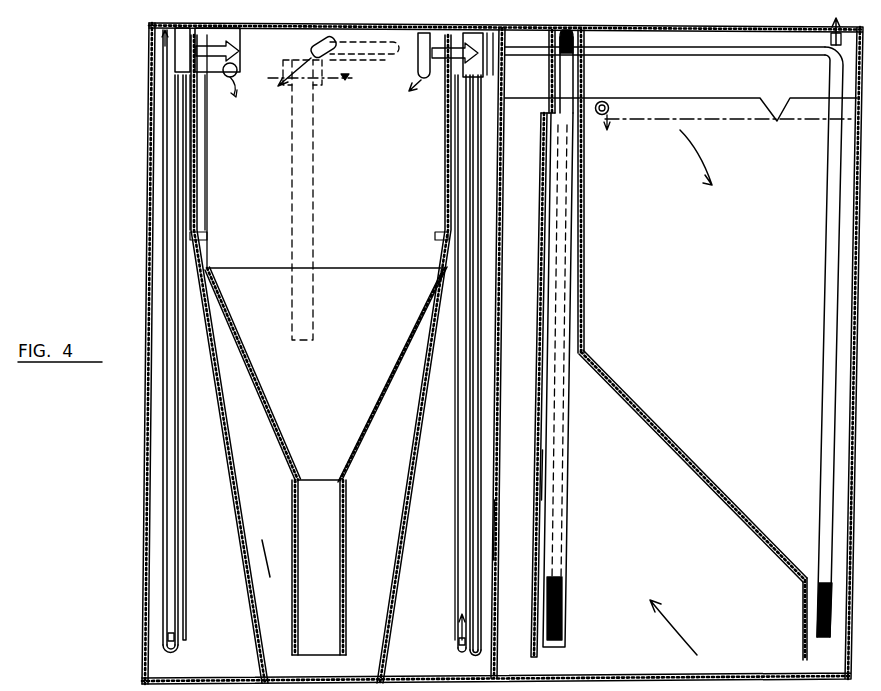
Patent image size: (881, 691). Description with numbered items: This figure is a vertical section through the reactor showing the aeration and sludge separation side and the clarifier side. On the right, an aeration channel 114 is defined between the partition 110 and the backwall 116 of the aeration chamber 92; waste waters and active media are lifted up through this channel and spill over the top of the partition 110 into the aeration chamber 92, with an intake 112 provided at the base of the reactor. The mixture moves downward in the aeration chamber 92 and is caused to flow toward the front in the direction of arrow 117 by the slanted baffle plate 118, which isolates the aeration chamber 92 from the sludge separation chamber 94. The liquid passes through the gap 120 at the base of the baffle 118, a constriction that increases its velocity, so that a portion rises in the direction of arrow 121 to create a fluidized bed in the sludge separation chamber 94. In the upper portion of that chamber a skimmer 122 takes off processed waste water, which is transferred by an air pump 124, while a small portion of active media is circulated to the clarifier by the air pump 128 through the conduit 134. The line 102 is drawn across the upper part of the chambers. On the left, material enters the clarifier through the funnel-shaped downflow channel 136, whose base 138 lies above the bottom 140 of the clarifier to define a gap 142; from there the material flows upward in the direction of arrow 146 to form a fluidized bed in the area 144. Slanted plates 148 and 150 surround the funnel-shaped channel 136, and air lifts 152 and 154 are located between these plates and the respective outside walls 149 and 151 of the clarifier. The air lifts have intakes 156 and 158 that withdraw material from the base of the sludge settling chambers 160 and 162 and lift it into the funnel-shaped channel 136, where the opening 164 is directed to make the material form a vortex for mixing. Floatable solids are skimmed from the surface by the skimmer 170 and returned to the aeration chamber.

The aeration chamber 92 is at (725, 256).
The sludge separation chamber 94 is at (652, 537).
The liquid level line 102 is at (778, 122).
The partition 110 is at (543, 480).
The intake 112 is at (532, 665).
The aeration channel 114 is at (536, 327).
The backwall 116 is at (500, 480).
The arrow 117 is at (709, 157).
The slanted baffle plate 118 is at (657, 432).
The gap 120 is at (800, 665).
The arrow 121 is at (684, 627).
The skimmer 122 is at (572, 150).
The air pump 124 is at (560, 72).
The air pump 128 is at (835, 58).
The conduit 134 is at (730, 56).
The funnel-shaped downflow channel 136 is at (200, 128).
The base 138 is at (298, 606).
The bottom 140 is at (292, 667).
The gap 142 is at (340, 660).
The area 144 is at (326, 382).
The arrow 146 is at (276, 552).
The slanted plate 148 is at (218, 400).
The outside wall 149 is at (149, 487).
The slanted plate 150 is at (413, 441).
The outside wall 151 is at (500, 545).
The air lift 152 is at (176, 540).
The air lift 154 is at (460, 545).
The intake 156 is at (178, 655).
The intake 158 is at (452, 657).
The sludge settling chamber 160 is at (212, 272).
The sludge settling chamber 162 is at (435, 357).
The opening 164 is at (240, 82).
The skimmer 170 is at (313, 107).